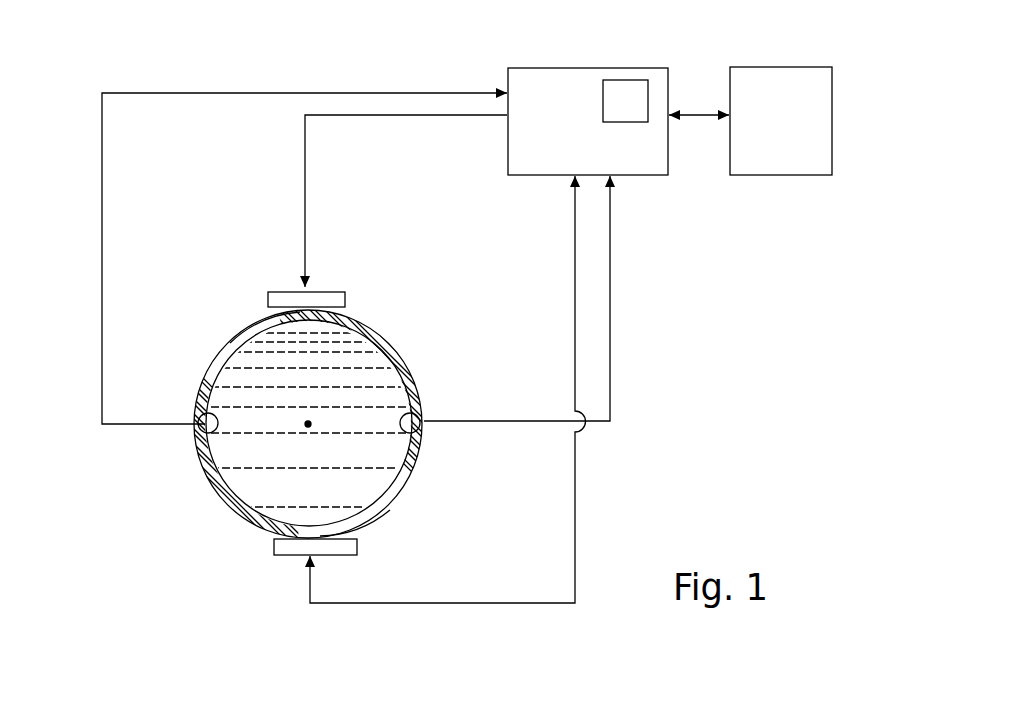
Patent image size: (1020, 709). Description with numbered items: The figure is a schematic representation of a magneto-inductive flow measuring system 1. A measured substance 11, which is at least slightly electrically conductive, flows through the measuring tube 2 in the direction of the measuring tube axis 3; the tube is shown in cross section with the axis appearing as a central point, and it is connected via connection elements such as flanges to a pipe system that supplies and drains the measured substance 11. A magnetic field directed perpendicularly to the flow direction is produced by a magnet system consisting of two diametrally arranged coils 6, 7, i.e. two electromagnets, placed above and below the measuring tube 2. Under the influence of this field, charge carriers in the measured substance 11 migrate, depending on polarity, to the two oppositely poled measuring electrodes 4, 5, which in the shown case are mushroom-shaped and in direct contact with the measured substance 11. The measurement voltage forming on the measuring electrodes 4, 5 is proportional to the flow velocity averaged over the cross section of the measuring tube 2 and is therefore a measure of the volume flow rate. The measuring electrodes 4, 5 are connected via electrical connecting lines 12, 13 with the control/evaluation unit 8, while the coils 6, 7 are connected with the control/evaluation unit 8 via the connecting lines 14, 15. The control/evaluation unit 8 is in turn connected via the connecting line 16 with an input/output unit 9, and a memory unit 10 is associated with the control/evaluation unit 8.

The magneto-inductive flow measuring system 1 is at (186, 543).
The measuring tube 2 is at (202, 390).
The measuring tube axis 3 is at (305, 425).
The measuring electrode 4 is at (423, 410).
The measuring electrode 5 is at (207, 417).
The coil 6 is at (332, 300).
The coil 7 is at (292, 557).
The control/evaluation unit 8 is at (539, 124).
The input/output unit 9 is at (769, 124).
The memory unit 10 is at (627, 103).
The measured substance 11 is at (378, 480).
The electrical connecting line 12 is at (611, 292).
The electrical connecting line 13 is at (102, 278).
The connecting line 14 is at (576, 505).
The connecting line 15 is at (305, 180).
The connecting line 16 is at (698, 113).